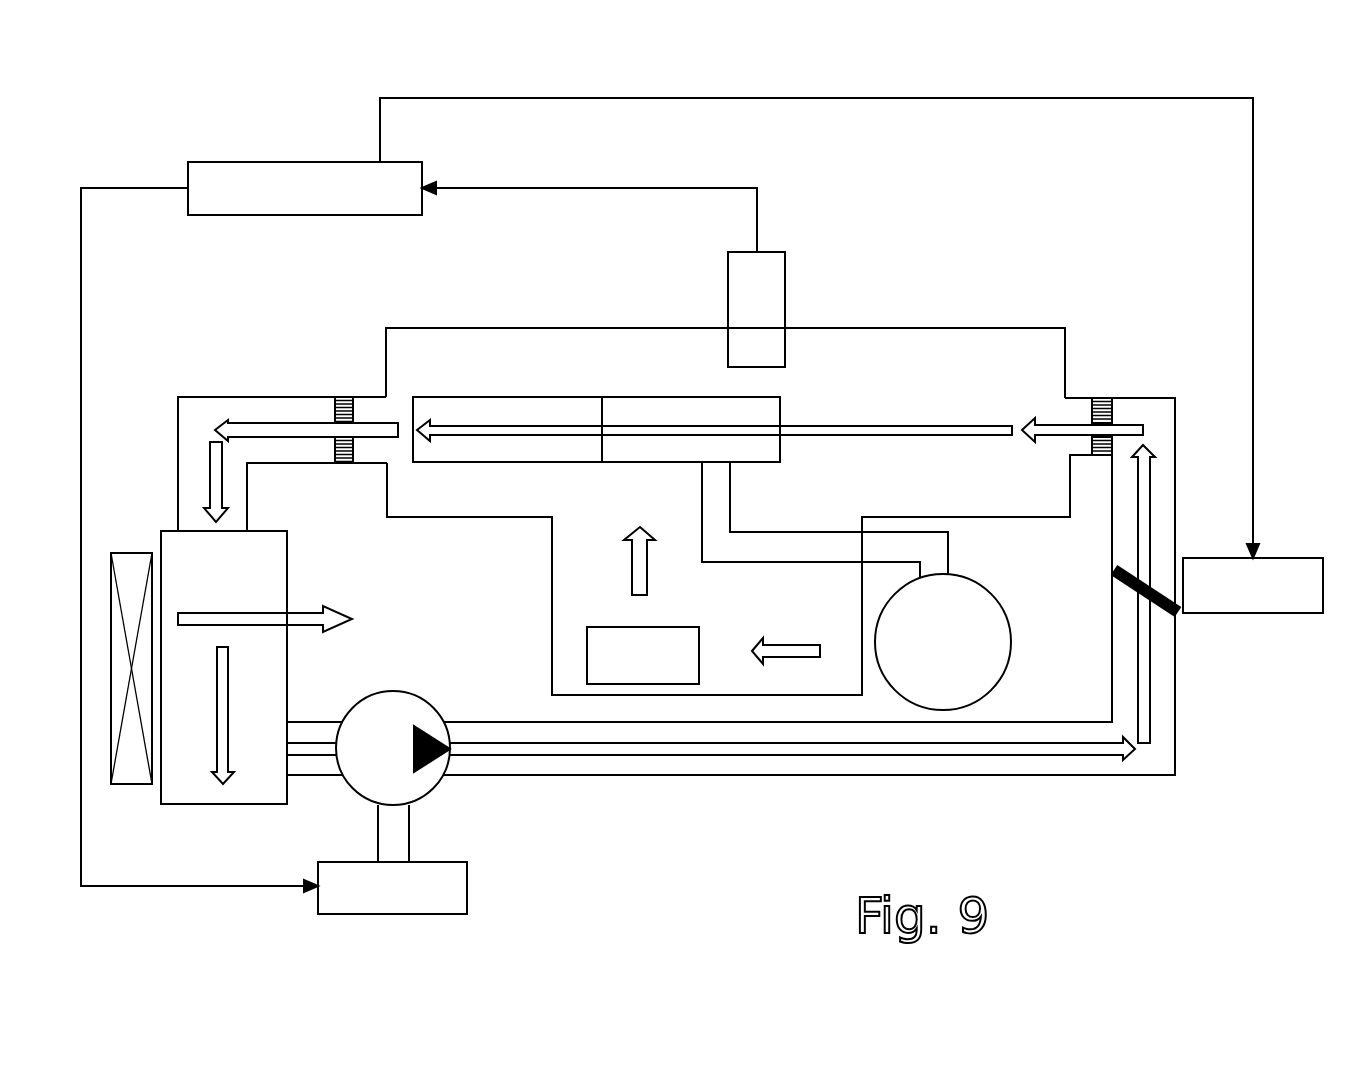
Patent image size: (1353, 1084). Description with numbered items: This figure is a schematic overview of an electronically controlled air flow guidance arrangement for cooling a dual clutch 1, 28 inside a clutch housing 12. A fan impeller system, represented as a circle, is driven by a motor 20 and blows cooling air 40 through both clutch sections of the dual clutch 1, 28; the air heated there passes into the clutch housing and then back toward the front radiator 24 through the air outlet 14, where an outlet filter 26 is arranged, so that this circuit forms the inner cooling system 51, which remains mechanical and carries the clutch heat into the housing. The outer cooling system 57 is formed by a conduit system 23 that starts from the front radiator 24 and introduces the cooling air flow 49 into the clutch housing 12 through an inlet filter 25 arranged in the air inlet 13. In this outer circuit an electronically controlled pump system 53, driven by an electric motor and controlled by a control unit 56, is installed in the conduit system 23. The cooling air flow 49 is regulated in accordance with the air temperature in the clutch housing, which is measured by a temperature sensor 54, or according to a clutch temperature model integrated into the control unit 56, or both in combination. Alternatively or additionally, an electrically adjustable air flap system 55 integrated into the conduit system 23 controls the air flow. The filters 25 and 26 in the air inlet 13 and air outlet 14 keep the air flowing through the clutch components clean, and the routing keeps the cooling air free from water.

The dual clutch 1 is at (712, 396).
The dual clutch 28 is at (567, 418).
The clutch housing 12 is at (868, 350).
The air inlet 13 is at (1078, 410).
The air outlet 14 is at (293, 413).
The motor 20 is at (997, 615).
The conduit system 23 is at (1125, 657).
The front radiator 24 is at (133, 578).
The inlet filter 25 is at (1108, 410).
The outlet filter 26 is at (347, 413).
The cooling air 40 is at (1138, 497).
The cooling air flow 49 is at (957, 755).
The inner cooling system 51 is at (662, 665).
The pump system 53 is at (445, 885).
The temperature sensor 54 is at (768, 300).
The air flap system 55 is at (1250, 590).
The control unit 56 is at (307, 175).
The outer cooling system 57 is at (267, 448).